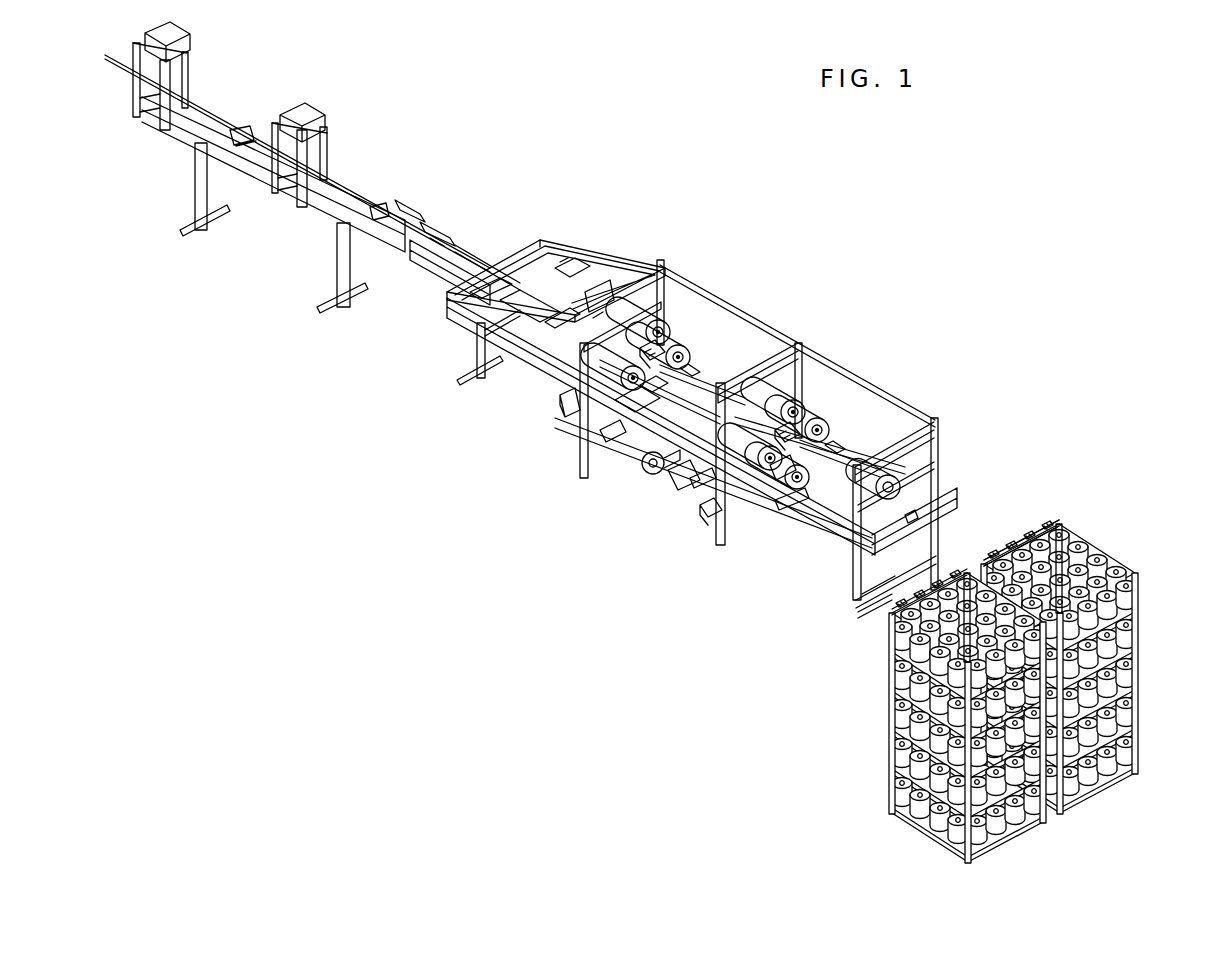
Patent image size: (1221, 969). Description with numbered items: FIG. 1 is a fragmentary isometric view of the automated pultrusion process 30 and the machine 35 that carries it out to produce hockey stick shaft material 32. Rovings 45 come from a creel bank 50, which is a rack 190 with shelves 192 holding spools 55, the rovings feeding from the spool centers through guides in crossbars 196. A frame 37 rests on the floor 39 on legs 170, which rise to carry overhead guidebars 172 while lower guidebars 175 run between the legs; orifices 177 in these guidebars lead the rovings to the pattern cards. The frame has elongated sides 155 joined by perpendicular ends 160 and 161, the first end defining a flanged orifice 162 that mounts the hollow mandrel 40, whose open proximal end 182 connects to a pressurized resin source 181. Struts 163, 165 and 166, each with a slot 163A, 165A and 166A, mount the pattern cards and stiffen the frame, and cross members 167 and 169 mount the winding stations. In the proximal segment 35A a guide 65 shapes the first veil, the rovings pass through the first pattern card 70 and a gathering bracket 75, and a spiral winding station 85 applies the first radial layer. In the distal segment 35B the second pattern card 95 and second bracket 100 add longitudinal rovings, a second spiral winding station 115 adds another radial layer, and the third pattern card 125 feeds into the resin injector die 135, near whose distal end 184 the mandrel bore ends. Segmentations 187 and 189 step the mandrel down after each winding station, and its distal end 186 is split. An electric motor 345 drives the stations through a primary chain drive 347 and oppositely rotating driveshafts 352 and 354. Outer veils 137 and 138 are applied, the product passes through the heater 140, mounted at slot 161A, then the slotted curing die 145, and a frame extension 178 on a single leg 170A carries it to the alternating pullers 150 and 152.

The automated process 30 is at (957, 266).
The hockey stick shaft material 32 is at (106, 58).
The machine 35 is at (812, 283).
The proximal segment of the machine 35A is at (895, 343).
The distal segment of the machine 35B is at (766, 290).
The frame 37 is at (975, 477).
The floor 39 is at (727, 562).
The mandrel 40 is at (530, 278).
The rovings 45 is at (1038, 510).
The creel bank 50 is at (1140, 525).
The spools 55 is at (1090, 540).
The guide 65 is at (835, 437).
The first pattern card 70 is at (828, 398).
The gathering bracket 75 is at (802, 455).
The spiral winding station 85 is at (810, 400).
The second pattern card 95 is at (700, 378).
The second bracket 100 is at (637, 410).
The second spiral winding station 115 is at (672, 326).
The third pattern card 125 is at (567, 320).
The resin injector die 135 is at (577, 298).
The outer veil 137 is at (480, 333).
The outer veil 138 is at (568, 290).
The heater 140 is at (483, 253).
The slotted curing die 145 is at (435, 230).
The puller 150 is at (333, 142).
The puller 152 is at (198, 80).
The frame sides 155 is at (885, 437).
The first frame end 160 is at (862, 582).
The second frame end 161 is at (528, 236).
The slot 161A is at (482, 285).
The flanged orifice 162 is at (924, 502).
The strut 163 is at (790, 515).
The slot 163A is at (778, 475).
The strut 165 is at (667, 468).
The slot 165A is at (650, 400).
The strut 166 is at (567, 325).
The slot 166A is at (545, 325).
The cross member 167 is at (713, 518).
The cross member 169 is at (573, 420).
The legs 170 is at (665, 283).
The single leg 170A is at (470, 362).
The overhead guidebars 172 is at (660, 268).
The lower guidebars 175 is at (872, 603).
The orifices 177 is at (855, 603).
The frame extension 178 is at (405, 275).
The pressurized resin source 181 is at (983, 497).
The proximal end of the mandrel 182 is at (908, 472).
The distal end of the injector die 184 is at (465, 358).
The distal end of the mandrel 186 is at (412, 212).
The segmentation 187 is at (797, 343).
The segmentation 189 is at (655, 302).
The rack 190 is at (1135, 648).
The shelves 192 is at (1136, 580).
The crossbars 196 is at (890, 604).
The electric motor 345 is at (755, 393).
The primary chain drive 347 is at (653, 485).
The output driveshaft 352 is at (605, 440).
The output driveshaft 354 is at (707, 485).